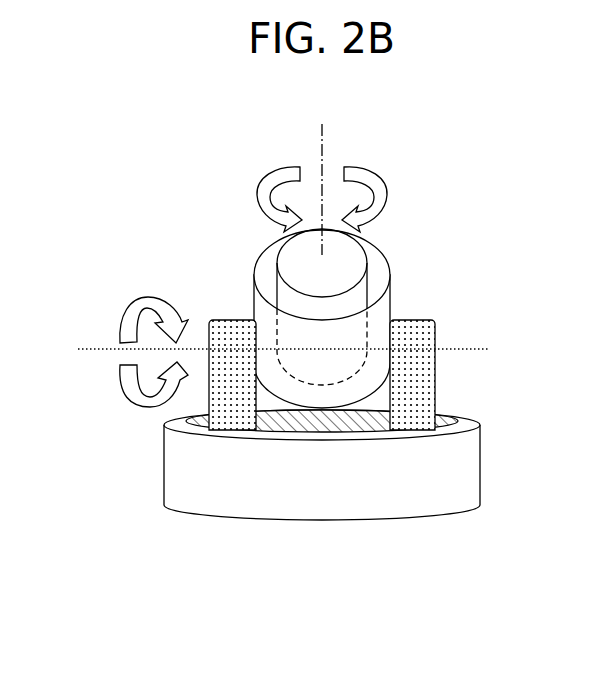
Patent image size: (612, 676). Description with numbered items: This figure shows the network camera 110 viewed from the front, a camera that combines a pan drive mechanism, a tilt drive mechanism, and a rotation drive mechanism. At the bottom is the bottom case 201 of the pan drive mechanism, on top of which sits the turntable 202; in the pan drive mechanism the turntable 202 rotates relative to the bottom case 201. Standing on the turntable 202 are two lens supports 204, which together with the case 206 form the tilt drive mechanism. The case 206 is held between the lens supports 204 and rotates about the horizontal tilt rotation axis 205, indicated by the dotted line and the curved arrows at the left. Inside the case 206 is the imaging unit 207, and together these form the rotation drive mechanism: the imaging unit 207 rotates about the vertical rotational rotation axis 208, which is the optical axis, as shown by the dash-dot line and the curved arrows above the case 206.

The network camera 110 is at (362, 391).
The bottom case 201 is at (482, 462).
The turntable 202 is at (456, 411).
The lens supports 204 is at (232, 318).
The tilt rotation axis 205 is at (105, 349).
The case 206 is at (259, 257).
The imaging unit 207 is at (380, 252).
The rotational rotation axis (optical axis) 208 is at (323, 138).